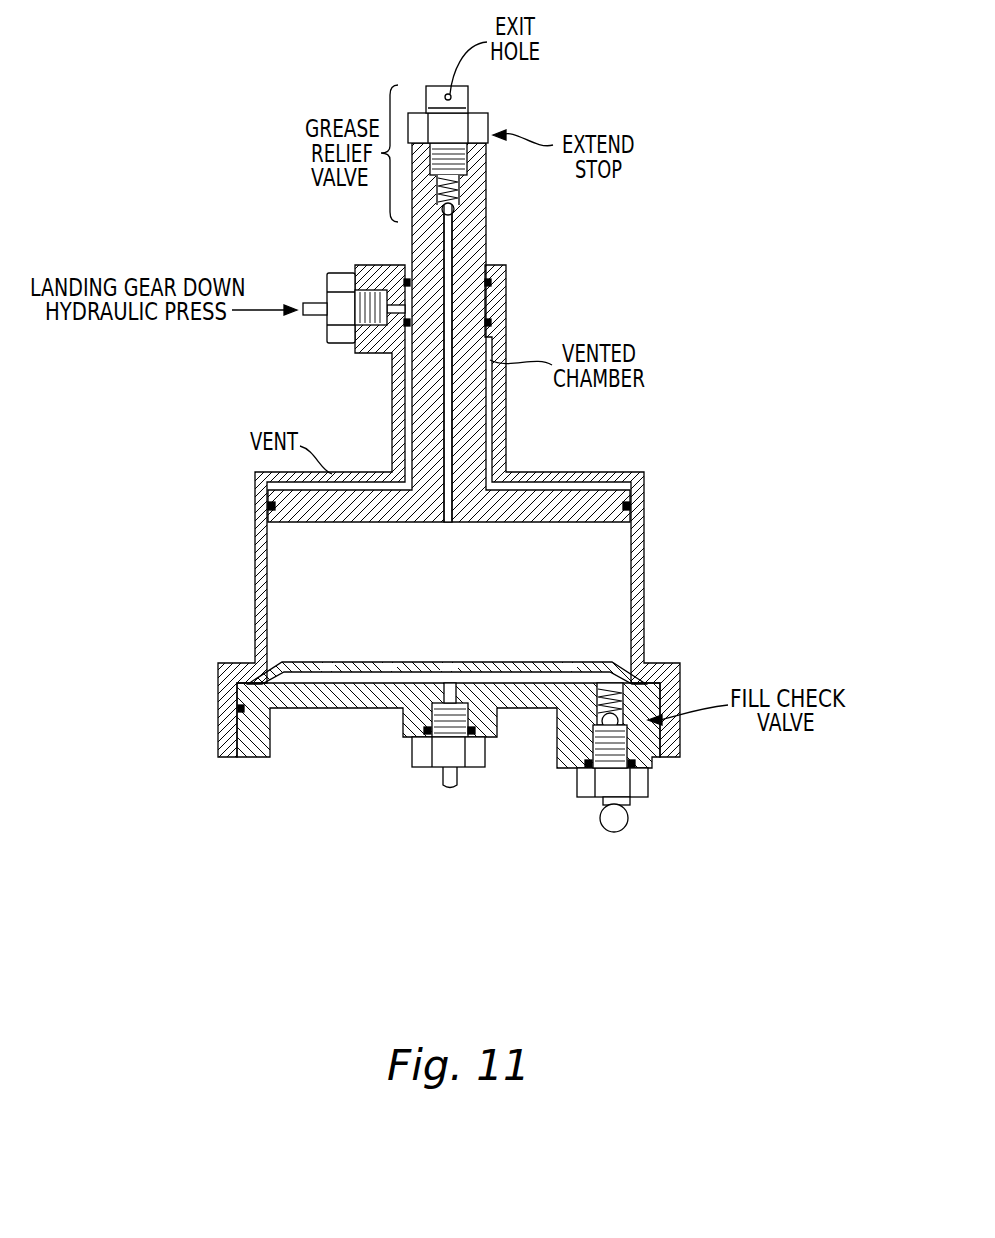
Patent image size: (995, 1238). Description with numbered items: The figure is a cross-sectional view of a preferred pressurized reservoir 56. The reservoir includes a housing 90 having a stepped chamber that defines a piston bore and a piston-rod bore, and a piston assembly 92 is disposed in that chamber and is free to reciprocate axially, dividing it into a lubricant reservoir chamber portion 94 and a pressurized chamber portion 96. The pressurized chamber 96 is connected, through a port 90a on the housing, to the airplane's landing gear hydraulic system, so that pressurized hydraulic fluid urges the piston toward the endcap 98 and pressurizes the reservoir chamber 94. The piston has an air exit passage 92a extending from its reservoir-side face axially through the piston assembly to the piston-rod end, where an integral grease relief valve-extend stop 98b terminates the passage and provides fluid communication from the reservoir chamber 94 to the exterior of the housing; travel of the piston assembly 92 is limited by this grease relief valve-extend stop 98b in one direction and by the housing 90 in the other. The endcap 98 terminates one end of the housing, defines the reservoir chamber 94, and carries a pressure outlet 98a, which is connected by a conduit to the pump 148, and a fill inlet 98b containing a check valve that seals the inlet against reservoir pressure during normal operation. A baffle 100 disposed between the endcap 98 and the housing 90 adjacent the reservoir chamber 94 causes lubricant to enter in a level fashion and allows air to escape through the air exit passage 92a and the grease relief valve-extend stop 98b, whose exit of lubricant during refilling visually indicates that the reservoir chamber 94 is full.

The pressurized reservoir 56 is at (224, 103).
The housing 90 is at (645, 587).
The landing gear down hydraulic pressure port 90a is at (345, 273).
The piston assembly 92 is at (484, 430).
The air exit passage 92a is at (447, 406).
The lubricant reservoir chamber portion 94 is at (596, 542).
The pressurized chamber portion 96 is at (503, 303).
The endcap 98 is at (318, 708).
The pressure outlet 98a is at (430, 757).
The grease relief valve-extend stop / fill inlet 98b is at (438, 122).
The baffle 100 is at (472, 662).
The pump 148 is at (450, 800).